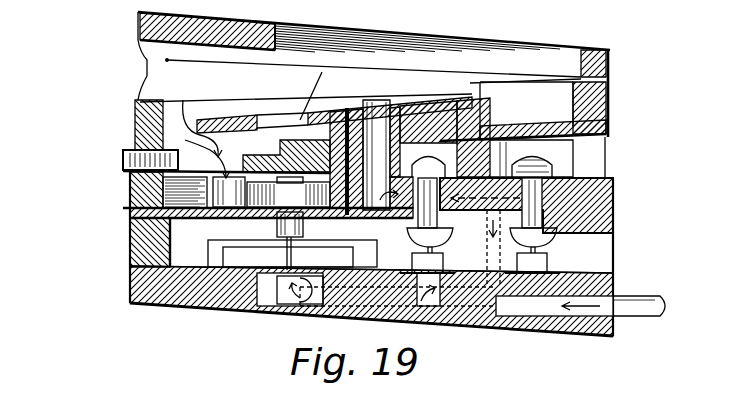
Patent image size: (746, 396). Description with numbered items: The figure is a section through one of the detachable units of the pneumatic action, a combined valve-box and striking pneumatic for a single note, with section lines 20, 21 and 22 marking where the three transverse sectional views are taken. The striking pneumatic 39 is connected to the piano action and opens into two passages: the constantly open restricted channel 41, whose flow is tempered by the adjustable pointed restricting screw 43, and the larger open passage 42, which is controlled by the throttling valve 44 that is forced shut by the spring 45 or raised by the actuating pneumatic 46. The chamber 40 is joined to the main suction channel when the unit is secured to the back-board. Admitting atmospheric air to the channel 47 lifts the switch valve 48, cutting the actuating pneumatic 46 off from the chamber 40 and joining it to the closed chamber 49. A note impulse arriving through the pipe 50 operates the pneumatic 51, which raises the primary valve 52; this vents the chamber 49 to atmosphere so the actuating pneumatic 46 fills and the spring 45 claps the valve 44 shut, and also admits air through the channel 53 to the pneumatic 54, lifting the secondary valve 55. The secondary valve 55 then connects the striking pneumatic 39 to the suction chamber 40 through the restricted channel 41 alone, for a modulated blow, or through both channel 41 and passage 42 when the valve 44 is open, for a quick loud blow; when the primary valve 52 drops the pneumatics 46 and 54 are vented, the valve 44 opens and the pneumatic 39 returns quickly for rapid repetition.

The section line 20— 20 is at (140, 102).
The section line 21— 21 is at (136, 173).
The section line 22— 22 is at (130, 265).
The striking pneumatic 39 is at (165, 60).
The chamber 40 is at (183, 239).
The restricted channel 41 is at (183, 100).
The open passage 42 is at (283, 150).
The restricting valve or screw 43 is at (125, 164).
The throttling valve 44 is at (238, 118).
The spring 45 is at (177, 101).
The actuating pneumatic 46 is at (360, 122).
The channel 47 is at (533, 310).
The switch valve 48 is at (360, 214).
The closed chamber 49 is at (478, 118).
The pipe 50 is at (658, 318).
The pneumatic 51 is at (566, 270).
The primary valve 52 is at (530, 212).
The channel 53 is at (432, 300).
The pneumatic 54 is at (252, 302).
The secondary valve 55 is at (180, 306).